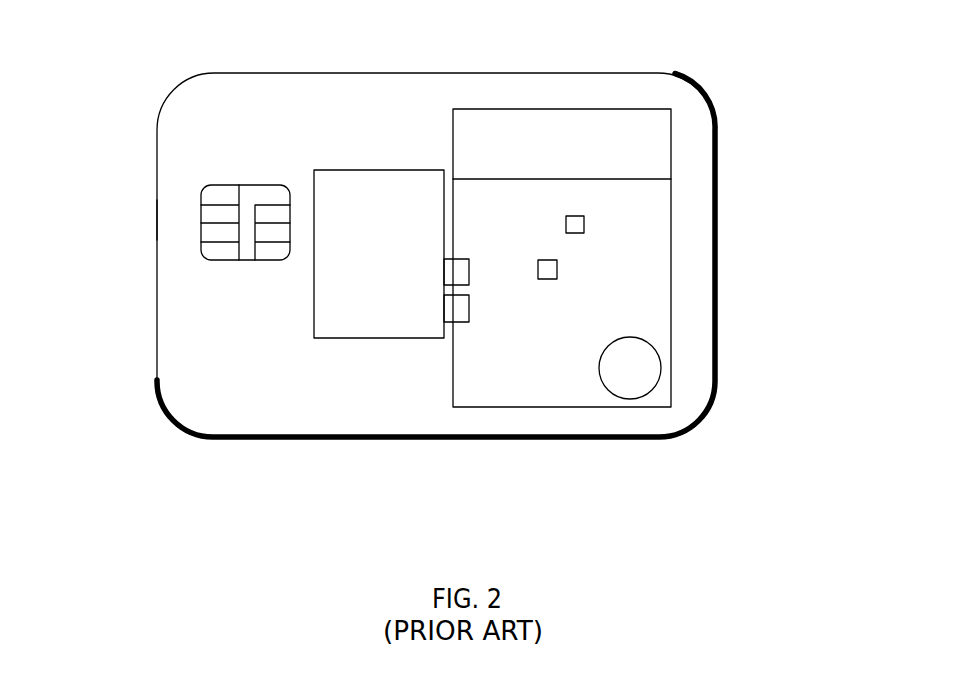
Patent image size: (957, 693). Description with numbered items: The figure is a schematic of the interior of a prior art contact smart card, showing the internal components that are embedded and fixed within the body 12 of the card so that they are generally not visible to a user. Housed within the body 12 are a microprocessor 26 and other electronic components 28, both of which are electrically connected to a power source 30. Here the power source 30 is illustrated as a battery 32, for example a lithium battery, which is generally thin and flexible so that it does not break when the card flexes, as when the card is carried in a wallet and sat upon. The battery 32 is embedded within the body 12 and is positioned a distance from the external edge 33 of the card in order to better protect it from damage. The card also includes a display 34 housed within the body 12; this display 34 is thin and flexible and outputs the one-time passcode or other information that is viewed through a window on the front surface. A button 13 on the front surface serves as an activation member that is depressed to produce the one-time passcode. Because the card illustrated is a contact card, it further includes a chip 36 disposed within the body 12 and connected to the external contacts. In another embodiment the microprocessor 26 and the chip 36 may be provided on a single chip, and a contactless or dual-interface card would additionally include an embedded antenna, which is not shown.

The body 12 is at (718, 318).
The button 13 is at (640, 377).
The microprocessor 26 is at (584, 224).
The other electronic components 28 is at (557, 272).
The power source 30 is at (314, 371).
The battery 32 is at (367, 263).
The external edge 33 is at (157, 218).
The display 34 is at (671, 142).
The chip 36 is at (247, 185).